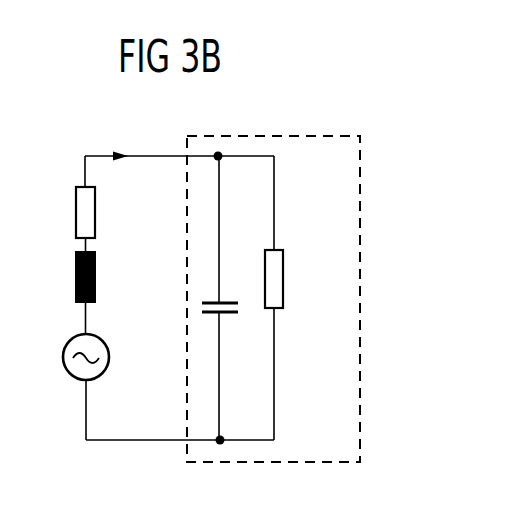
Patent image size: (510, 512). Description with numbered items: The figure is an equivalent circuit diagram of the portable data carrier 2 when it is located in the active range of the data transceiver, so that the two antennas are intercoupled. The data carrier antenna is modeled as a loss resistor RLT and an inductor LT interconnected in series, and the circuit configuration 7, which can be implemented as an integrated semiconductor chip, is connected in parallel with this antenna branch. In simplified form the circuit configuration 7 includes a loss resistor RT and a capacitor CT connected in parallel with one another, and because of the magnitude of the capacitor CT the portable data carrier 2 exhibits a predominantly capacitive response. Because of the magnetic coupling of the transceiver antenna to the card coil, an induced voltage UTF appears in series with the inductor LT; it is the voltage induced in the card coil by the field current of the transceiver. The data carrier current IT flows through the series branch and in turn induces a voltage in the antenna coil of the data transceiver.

The portable data carrier 2 is at (87, 281).
The circuit configuration 7 is at (317, 251).
The loss resistor RLT is at (95, 208).
The inductor LT is at (95, 277).
The induced voltage UTF is at (57, 358).
The data carrier current IT is at (124, 140).
The capacitor CT is at (230, 314).
The loss resistor RT is at (283, 278).